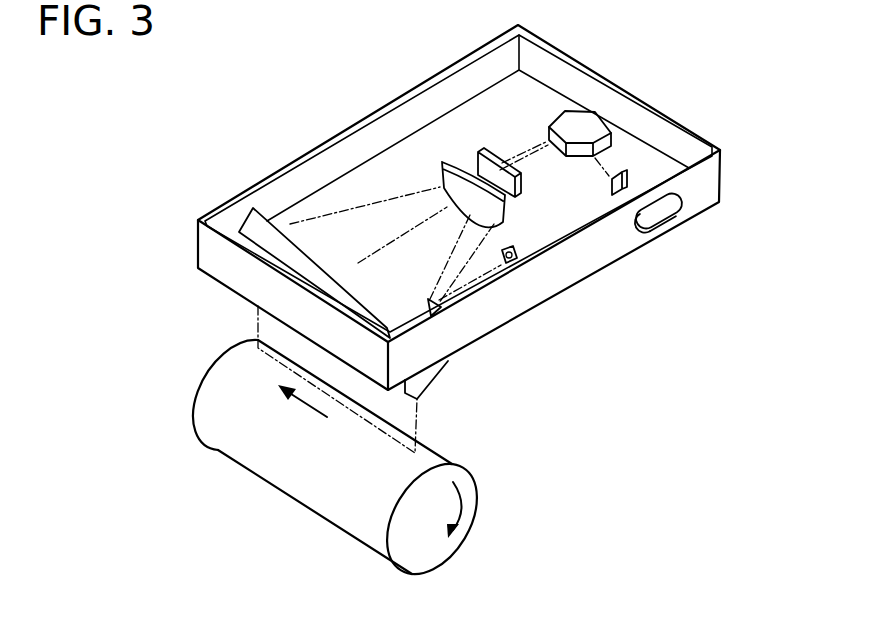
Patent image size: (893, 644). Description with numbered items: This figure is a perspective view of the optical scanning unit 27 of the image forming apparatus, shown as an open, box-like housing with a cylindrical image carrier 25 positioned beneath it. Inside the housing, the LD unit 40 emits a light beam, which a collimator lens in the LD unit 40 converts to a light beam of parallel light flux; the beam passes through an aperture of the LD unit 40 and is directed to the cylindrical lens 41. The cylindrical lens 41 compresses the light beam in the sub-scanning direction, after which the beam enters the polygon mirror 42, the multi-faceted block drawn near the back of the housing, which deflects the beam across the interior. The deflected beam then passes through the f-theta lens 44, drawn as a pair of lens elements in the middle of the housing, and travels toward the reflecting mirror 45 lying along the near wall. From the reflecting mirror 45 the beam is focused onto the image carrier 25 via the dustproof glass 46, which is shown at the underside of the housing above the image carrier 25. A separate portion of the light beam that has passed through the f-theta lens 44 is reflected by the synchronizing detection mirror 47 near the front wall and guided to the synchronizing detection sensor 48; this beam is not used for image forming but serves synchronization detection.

The optical scanning unit 27 is at (650, 64).
The image carrier 25 is at (232, 455).
The LD unit 40 is at (666, 218).
The cylindrical lens 41 is at (609, 181).
The polygon mirror 42 is at (556, 120).
The f-theta lens 44 is at (478, 153).
The reflecting mirror 45 is at (246, 213).
The dustproof glass 46 is at (445, 364).
The synchronizing detection mirror 47 is at (438, 313).
The synchronizing detection sensor 48 is at (514, 247).